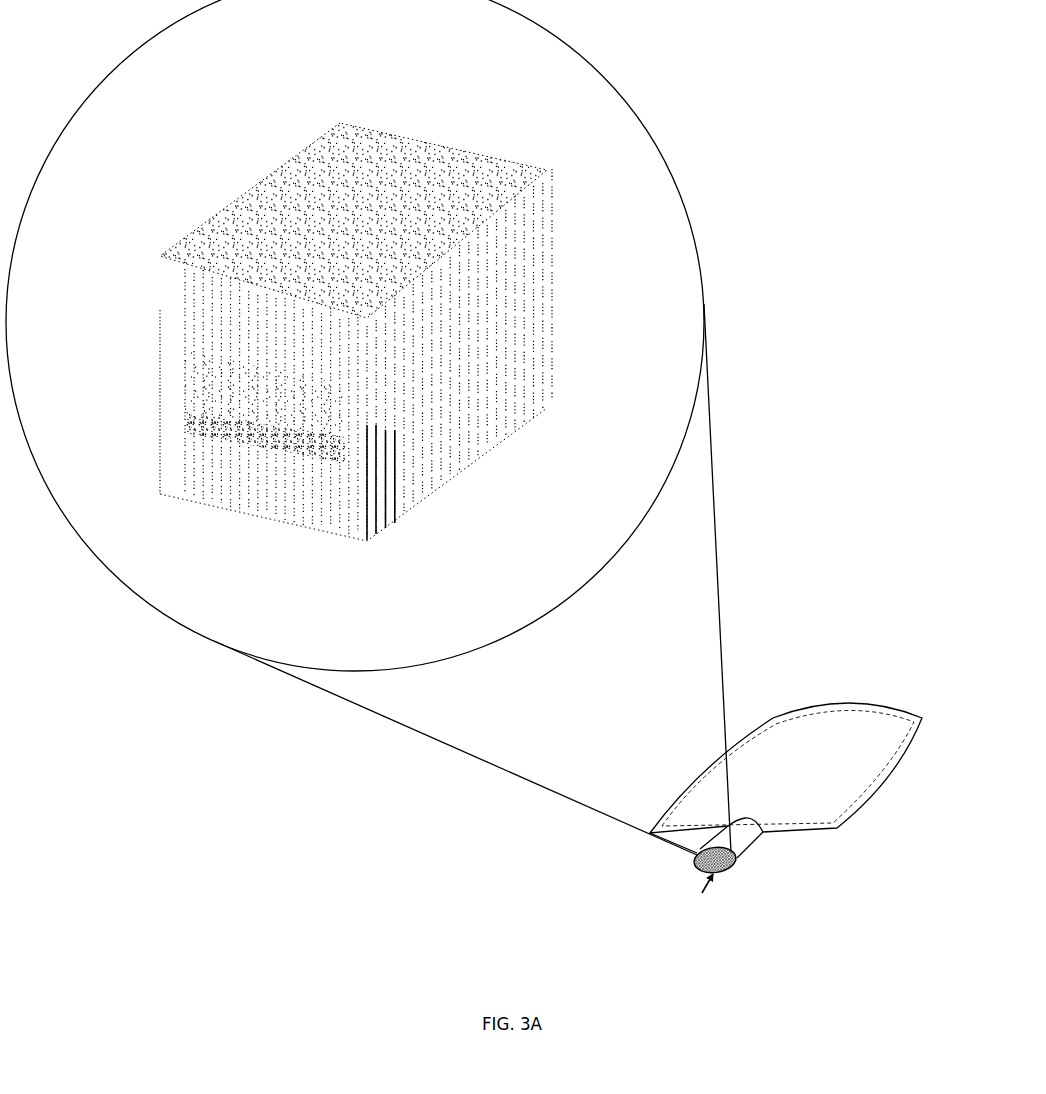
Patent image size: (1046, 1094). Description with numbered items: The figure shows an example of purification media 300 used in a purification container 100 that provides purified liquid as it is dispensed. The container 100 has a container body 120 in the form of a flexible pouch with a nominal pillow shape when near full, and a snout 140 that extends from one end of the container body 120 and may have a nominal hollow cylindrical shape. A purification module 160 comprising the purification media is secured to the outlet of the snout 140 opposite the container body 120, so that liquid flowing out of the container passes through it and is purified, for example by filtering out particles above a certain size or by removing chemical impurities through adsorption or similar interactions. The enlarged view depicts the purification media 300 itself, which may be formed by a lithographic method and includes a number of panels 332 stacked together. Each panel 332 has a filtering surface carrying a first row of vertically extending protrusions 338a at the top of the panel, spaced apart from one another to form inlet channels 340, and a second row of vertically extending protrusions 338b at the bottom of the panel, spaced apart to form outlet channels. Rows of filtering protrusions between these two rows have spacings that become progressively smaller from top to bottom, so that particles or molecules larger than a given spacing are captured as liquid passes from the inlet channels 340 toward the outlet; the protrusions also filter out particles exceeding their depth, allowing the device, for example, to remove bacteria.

The purification container 100 is at (767, 817).
The container body 120 is at (767, 738).
The snout 140 is at (750, 838).
The purification module 160 is at (700, 865).
The purification media 300 is at (366, 332).
The panels 332 is at (549, 191).
The first row of vertically extending protrusions 338a is at (257, 295).
The second row of vertically extending protrusions 338b is at (227, 517).
The inlet channels 340 is at (362, 135).